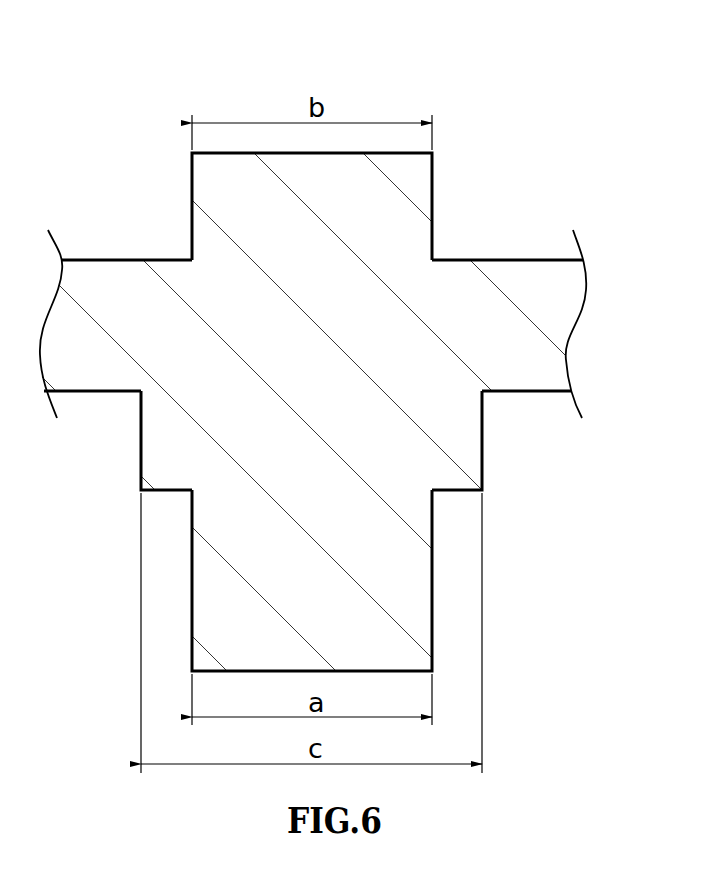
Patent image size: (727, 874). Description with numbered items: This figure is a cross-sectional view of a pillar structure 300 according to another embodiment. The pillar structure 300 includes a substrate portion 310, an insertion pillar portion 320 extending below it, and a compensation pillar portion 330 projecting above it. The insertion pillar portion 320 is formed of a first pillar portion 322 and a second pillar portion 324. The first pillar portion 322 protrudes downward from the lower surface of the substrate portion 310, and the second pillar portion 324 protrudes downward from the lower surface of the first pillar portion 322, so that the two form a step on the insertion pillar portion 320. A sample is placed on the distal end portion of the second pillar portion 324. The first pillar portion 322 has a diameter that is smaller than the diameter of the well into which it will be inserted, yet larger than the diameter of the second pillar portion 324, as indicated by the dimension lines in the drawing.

The pillar structure 300 is at (168, 71).
The substrate portion 310 is at (537, 267).
The insertion pillar portion 320 is at (552, 508).
The first pillar portion 322 is at (482, 448).
The second pillar portion 324 is at (432, 586).
The compensation pillar portion 330 is at (432, 165).